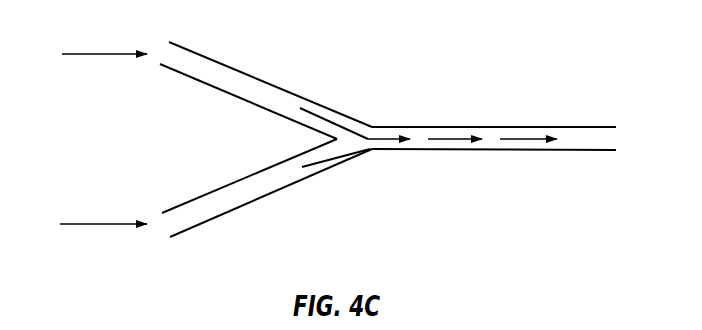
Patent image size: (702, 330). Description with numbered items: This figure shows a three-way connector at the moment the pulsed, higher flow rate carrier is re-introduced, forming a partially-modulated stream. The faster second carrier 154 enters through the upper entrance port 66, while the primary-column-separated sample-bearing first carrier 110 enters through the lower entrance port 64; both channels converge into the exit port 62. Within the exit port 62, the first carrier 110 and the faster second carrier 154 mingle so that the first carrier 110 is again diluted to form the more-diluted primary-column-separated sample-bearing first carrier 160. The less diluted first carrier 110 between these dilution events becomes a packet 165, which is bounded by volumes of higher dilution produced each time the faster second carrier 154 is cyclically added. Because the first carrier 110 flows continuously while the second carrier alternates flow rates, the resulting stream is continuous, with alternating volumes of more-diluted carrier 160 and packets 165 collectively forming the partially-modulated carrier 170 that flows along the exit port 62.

The faster second carrier 154 is at (92, 52).
The primary-column-separated sample-bearing first carrier 110 is at (92, 227).
The entrance port 66 is at (212, 71).
The entrance port 64 is at (212, 204).
The exit port 62 is at (602, 133).
The more-diluted primary-column-separated sample-bearing first carrier 160 is at (377, 135).
The packet 165 is at (450, 133).
The partially-modulated carrier 170 is at (455, 152).